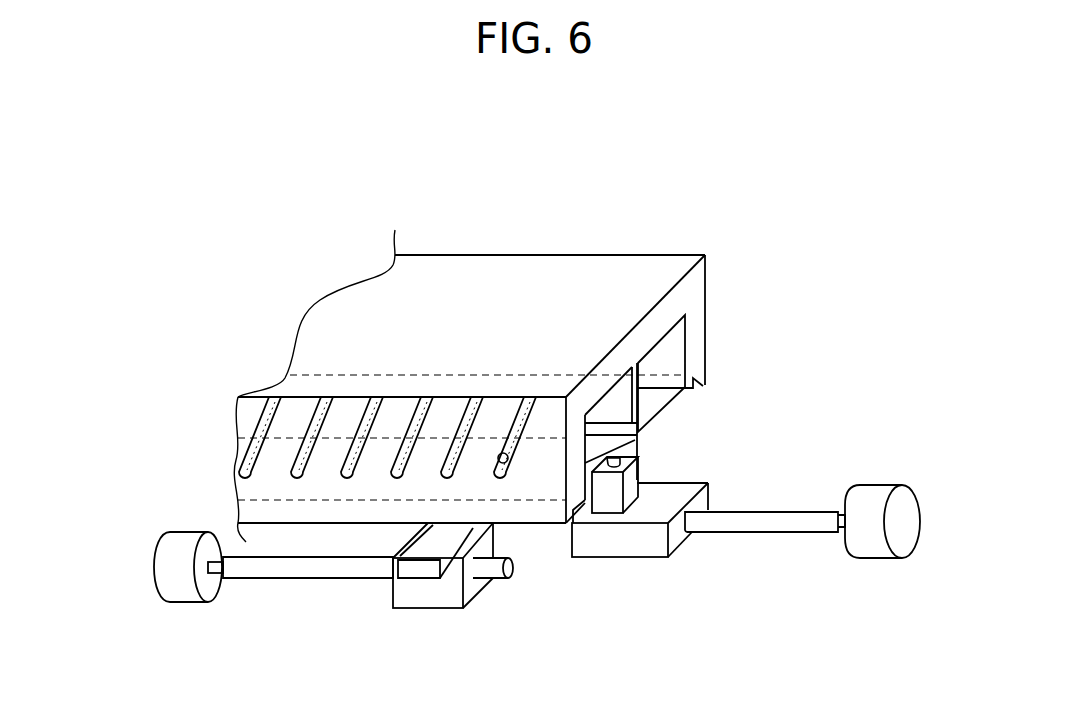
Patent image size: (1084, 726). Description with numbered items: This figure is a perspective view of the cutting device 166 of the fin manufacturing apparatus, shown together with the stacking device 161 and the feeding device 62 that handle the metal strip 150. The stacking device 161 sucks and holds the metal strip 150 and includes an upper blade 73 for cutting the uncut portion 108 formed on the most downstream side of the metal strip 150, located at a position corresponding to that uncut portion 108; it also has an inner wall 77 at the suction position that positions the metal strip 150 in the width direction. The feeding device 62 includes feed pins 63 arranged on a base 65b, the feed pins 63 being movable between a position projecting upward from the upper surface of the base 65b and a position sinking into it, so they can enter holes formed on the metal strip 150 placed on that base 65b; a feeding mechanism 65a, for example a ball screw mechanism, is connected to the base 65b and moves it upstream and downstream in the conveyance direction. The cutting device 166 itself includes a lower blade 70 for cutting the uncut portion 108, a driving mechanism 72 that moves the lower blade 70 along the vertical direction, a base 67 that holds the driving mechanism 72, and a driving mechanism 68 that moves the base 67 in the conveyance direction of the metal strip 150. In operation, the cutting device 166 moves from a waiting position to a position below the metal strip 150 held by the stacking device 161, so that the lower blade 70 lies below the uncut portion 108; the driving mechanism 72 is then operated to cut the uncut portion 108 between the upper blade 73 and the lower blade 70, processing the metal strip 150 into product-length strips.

The metal strip 150 is at (253, 450).
The stacking device 161 is at (616, 283).
The inner wall 77 is at (663, 372).
The upper blade 73 is at (638, 423).
The driving mechanism 72 is at (600, 497).
The uncut portion 108 is at (620, 458).
The lower blade 70 is at (638, 458).
The base 67 is at (662, 545).
The driving mechanism 68 is at (870, 498).
The feeding mechanism 65a is at (173, 568).
The base 65b is at (435, 568).
The feed pins 63 is at (506, 470).
The feeding device 62 is at (413, 647).
The cutting device 166 is at (661, 633).